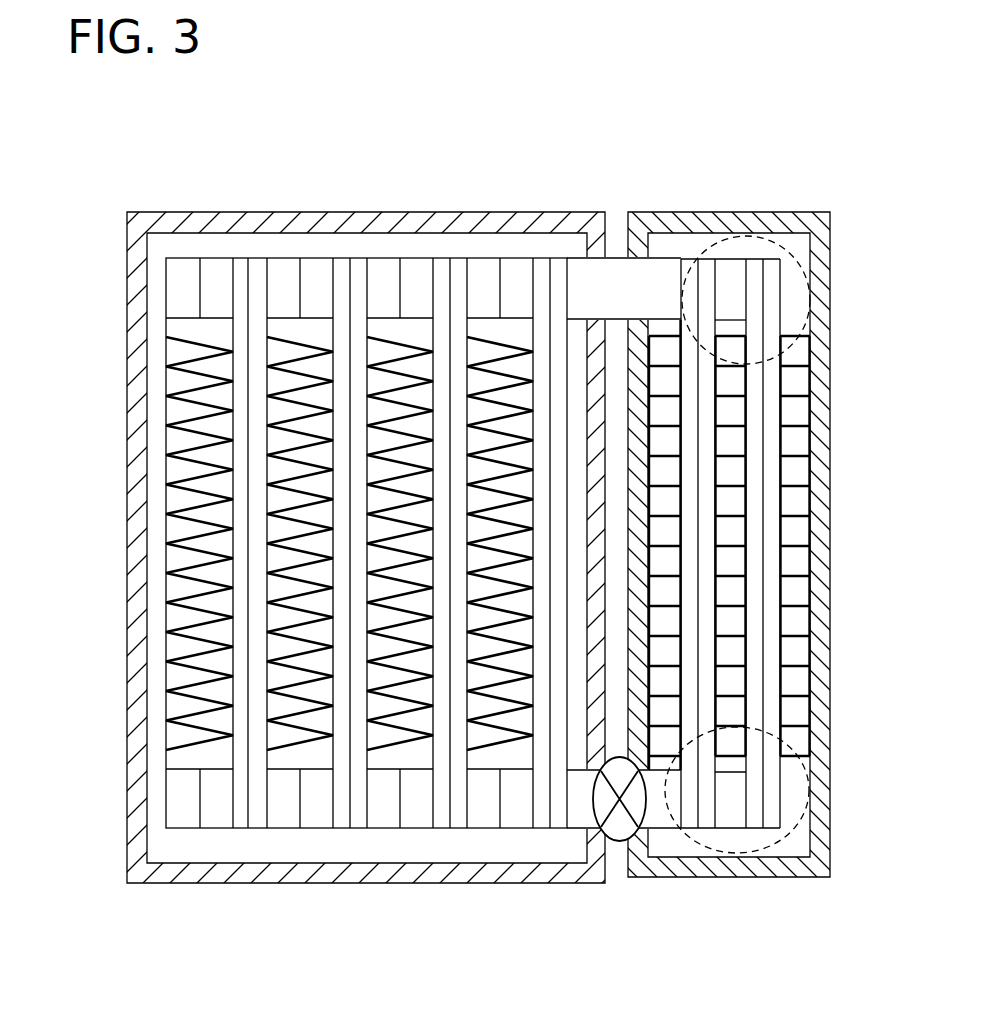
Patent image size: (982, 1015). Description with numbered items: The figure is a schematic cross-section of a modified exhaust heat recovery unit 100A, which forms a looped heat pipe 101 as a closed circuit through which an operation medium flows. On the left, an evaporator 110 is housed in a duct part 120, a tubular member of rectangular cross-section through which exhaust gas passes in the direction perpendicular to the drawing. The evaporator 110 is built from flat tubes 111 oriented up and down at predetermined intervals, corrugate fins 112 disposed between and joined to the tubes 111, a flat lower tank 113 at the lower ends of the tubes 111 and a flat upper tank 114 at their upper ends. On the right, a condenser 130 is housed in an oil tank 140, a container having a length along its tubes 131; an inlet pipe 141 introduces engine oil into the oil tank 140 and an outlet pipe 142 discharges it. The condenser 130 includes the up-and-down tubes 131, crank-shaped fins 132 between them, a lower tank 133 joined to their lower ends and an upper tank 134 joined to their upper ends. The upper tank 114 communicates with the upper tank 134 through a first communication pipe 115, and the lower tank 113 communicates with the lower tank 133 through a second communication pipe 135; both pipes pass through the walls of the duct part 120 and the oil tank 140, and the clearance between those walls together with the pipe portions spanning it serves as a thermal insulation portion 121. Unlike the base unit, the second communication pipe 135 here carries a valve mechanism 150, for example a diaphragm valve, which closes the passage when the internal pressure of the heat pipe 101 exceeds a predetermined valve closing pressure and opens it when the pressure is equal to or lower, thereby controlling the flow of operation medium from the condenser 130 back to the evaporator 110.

The modified unit 100A is at (533, 195).
The looped heat pipe 101 is at (316, 256).
The evaporator 110 is at (381, 256).
The tubes 111 is at (238, 368).
The fins 112 is at (176, 428).
The lower tank 113 is at (485, 815).
The upper tank 114 is at (416, 270).
The first communication pipe 115 is at (660, 272).
The duct part 120 is at (137, 276).
The thermal insulation portion 121 is at (622, 257).
The condenser 130 is at (692, 250).
The tubes 131 is at (771, 380).
The fins 132 is at (795, 488).
The lower tank 133 is at (731, 817).
The upper tank 134 is at (734, 272).
The second communication pipe 135 is at (657, 813).
The oil tank 140 is at (831, 253).
The inlet pipe 141 is at (811, 270).
The outlet pipe 142 is at (776, 842).
The valve mechanism 150 is at (620, 842).